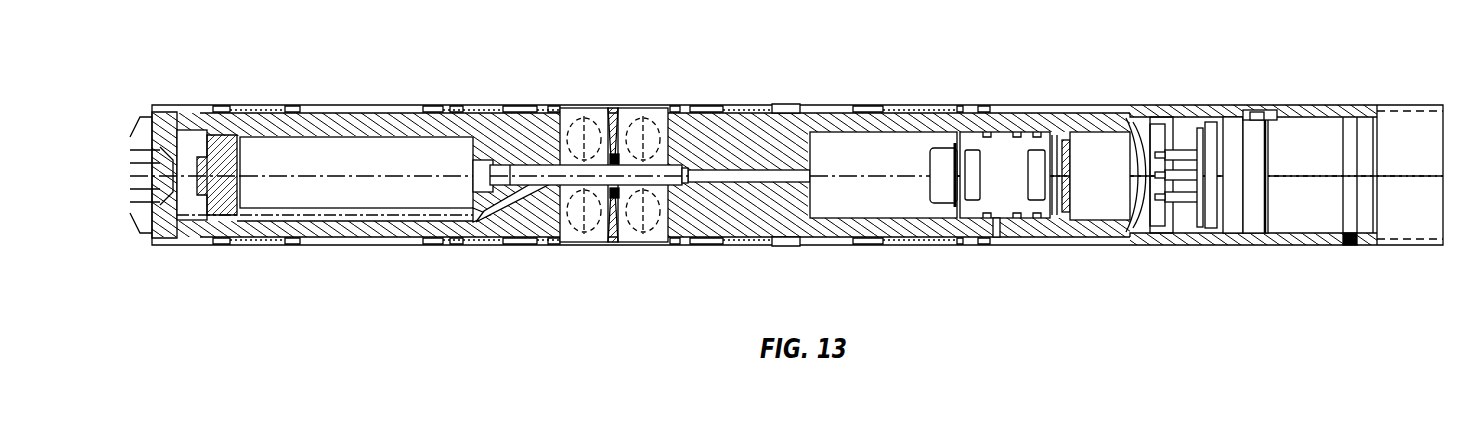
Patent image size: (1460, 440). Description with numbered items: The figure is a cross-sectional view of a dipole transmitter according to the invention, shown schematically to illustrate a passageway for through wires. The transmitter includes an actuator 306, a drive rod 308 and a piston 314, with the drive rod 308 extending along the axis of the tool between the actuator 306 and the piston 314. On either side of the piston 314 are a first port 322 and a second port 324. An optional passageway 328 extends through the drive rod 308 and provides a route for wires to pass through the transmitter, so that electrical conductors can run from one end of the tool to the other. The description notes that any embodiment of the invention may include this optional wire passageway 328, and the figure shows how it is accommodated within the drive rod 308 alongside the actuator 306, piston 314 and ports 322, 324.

The actuator 306 is at (375, 167).
The drive rod 308 is at (635, 188).
The piston 314 is at (613, 108).
The first port 322 is at (652, 128).
The second port 324 is at (573, 223).
The passageway 328 is at (572, 170).